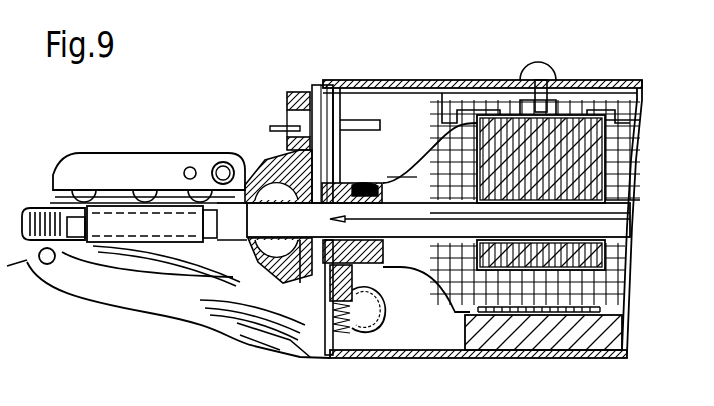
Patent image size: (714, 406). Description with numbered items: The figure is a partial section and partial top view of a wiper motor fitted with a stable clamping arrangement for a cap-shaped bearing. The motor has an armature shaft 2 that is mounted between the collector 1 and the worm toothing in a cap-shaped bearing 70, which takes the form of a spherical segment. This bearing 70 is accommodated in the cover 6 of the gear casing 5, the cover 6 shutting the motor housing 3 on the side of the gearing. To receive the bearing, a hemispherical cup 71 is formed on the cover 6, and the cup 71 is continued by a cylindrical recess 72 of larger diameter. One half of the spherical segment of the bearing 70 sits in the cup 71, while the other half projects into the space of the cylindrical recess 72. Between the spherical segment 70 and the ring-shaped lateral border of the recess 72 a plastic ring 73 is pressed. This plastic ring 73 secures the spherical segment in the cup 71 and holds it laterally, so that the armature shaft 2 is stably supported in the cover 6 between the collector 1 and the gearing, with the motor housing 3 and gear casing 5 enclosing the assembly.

The collector 1 is at (355, 182).
The armature shaft 2 is at (400, 212).
The motor housing 3 is at (368, 88).
The gear casing 5 is at (130, 176).
The cover 6 is at (300, 92).
The cap-shaped bearing 70 is at (282, 167).
The hemispherical cup 71 is at (208, 157).
The cylindrical recess 72 is at (283, 163).
The plastic ring 73 is at (305, 112).